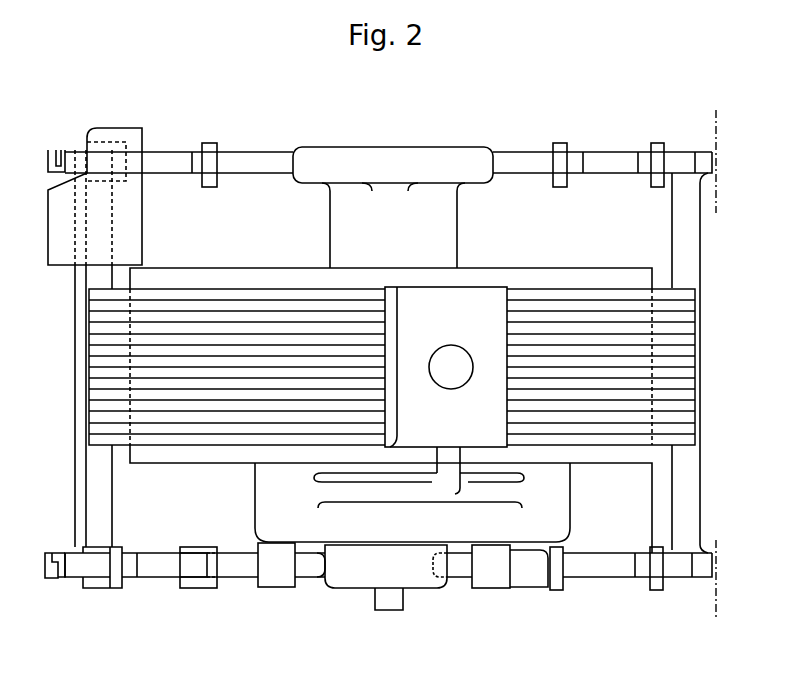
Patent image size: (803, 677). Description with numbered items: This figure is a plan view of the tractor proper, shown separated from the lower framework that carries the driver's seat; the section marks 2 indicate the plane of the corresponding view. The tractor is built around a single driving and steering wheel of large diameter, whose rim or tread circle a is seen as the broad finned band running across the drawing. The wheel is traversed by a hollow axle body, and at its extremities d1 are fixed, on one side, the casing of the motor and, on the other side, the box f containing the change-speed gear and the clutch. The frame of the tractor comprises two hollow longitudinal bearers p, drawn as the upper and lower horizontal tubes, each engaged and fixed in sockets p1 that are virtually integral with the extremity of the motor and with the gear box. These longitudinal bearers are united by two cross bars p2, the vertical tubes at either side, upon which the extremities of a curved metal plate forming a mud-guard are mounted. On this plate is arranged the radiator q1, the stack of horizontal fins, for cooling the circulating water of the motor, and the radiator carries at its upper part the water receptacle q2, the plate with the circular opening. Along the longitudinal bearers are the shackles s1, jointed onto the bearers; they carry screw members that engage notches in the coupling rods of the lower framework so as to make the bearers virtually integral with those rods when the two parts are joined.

The hollow longitudinal bearers p is at (272, 155).
The shackles s1 is at (207, 165).
The sockets p1 is at (341, 160).
The box f is at (503, 212).
The rim or tread circle a is at (225, 445).
The radiator q1 is at (113, 414).
The water receptacle q2 is at (446, 367).
The cross bars p2 is at (92, 530).
The extremities of the hollow axle body d1 is at (412, 494).
The section line 2 is at (731, 363).